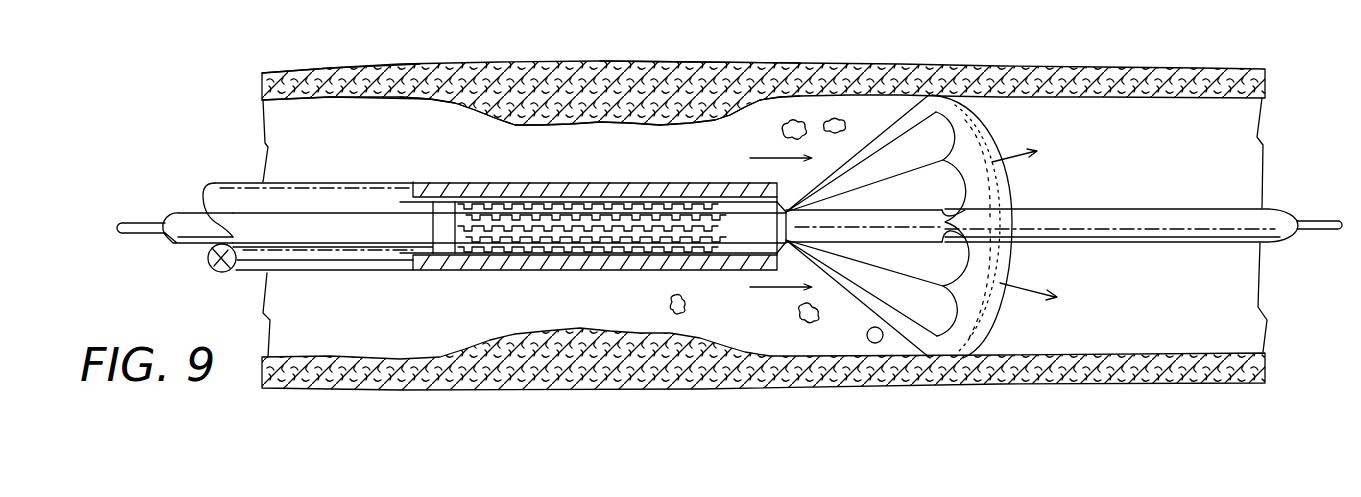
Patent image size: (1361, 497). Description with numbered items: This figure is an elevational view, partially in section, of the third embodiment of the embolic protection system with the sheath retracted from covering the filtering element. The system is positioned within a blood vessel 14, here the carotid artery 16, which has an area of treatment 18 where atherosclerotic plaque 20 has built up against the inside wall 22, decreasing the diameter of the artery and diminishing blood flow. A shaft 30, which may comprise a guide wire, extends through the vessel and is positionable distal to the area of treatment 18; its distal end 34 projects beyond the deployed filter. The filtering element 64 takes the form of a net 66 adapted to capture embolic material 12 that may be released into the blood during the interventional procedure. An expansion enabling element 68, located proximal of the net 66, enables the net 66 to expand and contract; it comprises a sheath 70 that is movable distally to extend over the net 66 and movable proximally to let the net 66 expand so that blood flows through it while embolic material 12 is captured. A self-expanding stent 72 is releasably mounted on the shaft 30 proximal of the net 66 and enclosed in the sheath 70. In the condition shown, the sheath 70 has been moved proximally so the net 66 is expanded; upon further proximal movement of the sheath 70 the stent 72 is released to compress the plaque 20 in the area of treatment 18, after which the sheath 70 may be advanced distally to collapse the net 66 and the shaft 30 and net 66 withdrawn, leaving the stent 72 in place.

The embolic material 12 is at (793, 127).
The blood vessel 14 is at (898, 67).
The carotid artery 16 is at (320, 82).
The area of treatment 18 is at (672, 63).
The atherosclerotic plaque 20 is at (578, 72).
The inside wall 22 is at (407, 75).
The shaft 30 is at (870, 232).
The distal end 34 is at (1277, 220).
The filtering element 64 is at (987, 303).
The net 66 is at (987, 147).
The expansion enabling element 68 is at (467, 182).
The sheath 70 is at (515, 260).
The self-expanding stent 72 is at (572, 233).